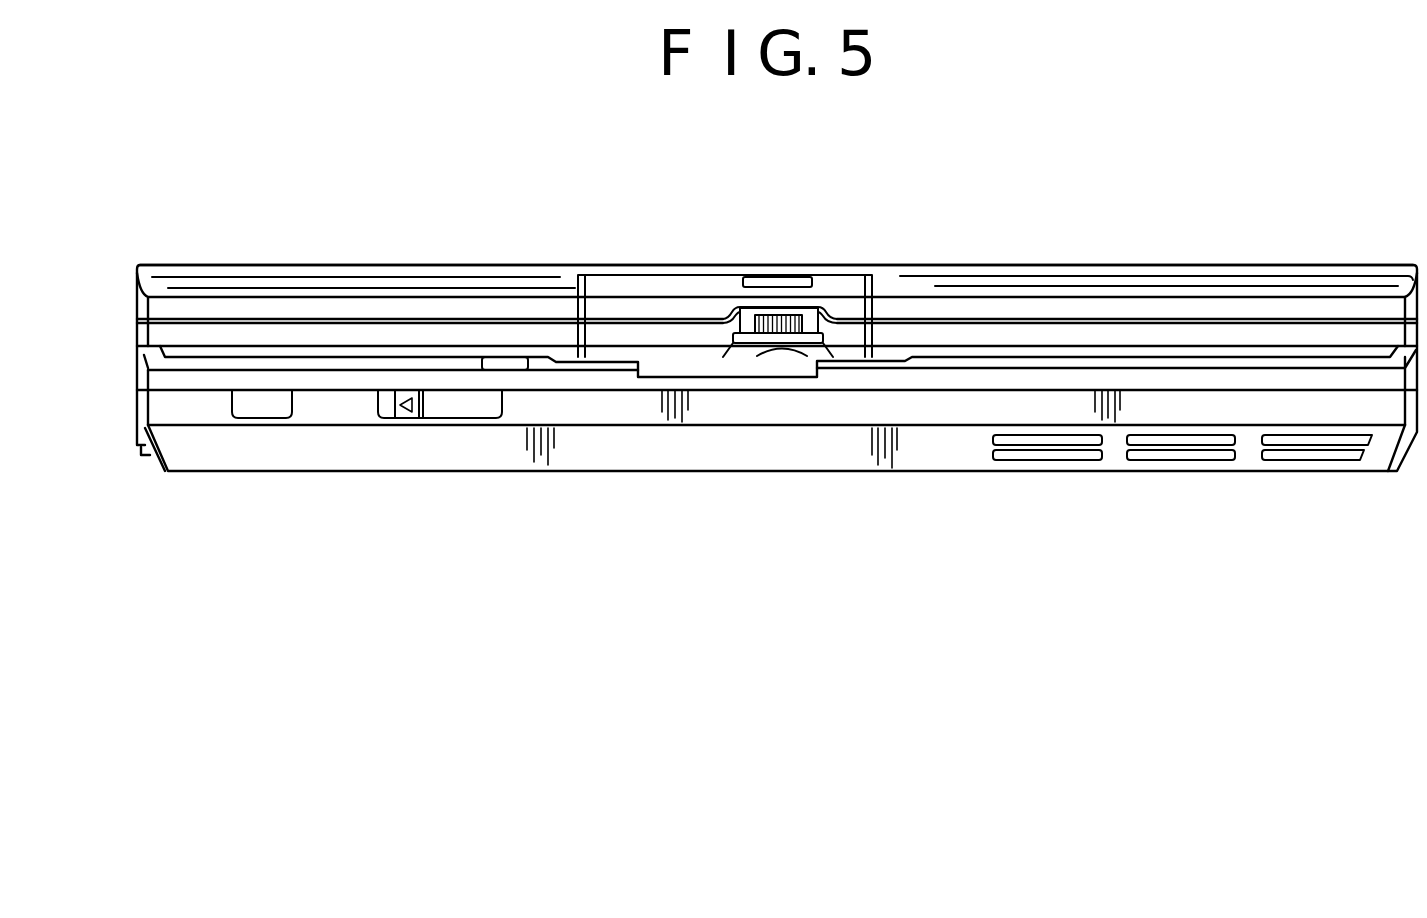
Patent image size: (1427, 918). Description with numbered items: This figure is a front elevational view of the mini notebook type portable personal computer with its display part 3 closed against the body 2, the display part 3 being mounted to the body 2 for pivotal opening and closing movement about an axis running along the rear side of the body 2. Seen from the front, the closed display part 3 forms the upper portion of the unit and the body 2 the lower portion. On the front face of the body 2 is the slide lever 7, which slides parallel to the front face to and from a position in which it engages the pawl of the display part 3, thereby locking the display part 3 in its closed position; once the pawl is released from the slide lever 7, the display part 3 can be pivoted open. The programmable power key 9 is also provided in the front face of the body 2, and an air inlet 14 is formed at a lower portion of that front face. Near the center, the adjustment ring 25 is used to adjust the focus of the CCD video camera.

The body 2 is at (748, 473).
The display part 3 is at (1210, 263).
The slide lever 7 is at (452, 412).
The programmable power key 9 is at (262, 420).
The air inlet 14 is at (1182, 458).
The adjustment ring 25 is at (782, 308).